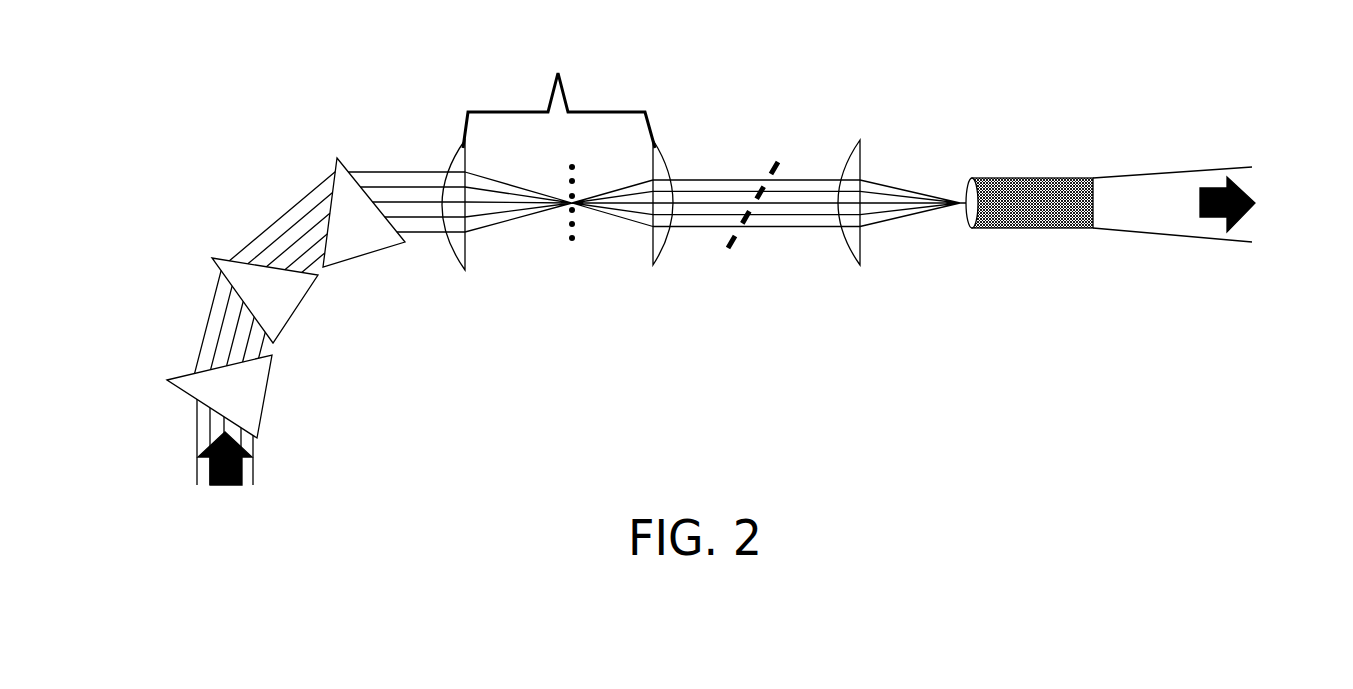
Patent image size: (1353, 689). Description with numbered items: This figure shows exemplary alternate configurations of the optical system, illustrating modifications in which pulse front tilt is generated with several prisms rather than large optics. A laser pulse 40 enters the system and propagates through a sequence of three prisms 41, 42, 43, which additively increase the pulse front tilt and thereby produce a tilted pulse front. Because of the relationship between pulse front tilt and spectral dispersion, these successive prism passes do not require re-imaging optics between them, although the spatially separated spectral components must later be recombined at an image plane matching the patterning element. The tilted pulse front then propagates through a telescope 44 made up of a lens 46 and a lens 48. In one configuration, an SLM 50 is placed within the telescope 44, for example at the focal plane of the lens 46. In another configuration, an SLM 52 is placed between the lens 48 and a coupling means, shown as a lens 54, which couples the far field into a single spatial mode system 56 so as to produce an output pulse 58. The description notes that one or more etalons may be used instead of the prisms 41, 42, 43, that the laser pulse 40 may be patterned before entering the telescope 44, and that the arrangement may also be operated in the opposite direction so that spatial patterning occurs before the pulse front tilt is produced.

The laser pulse 40 is at (223, 488).
The prism 41 is at (181, 389).
The prism 42 is at (208, 260).
The prism 43 is at (335, 168).
The telescope 44 is at (559, 87).
The lens 46 is at (453, 160).
The lens 48 is at (664, 156).
The SLM 50 is at (570, 222).
The SLM 52 is at (767, 160).
The lens 54 is at (862, 147).
The single spatial mode system 56 is at (997, 178).
The output pulse 58 is at (1247, 192).